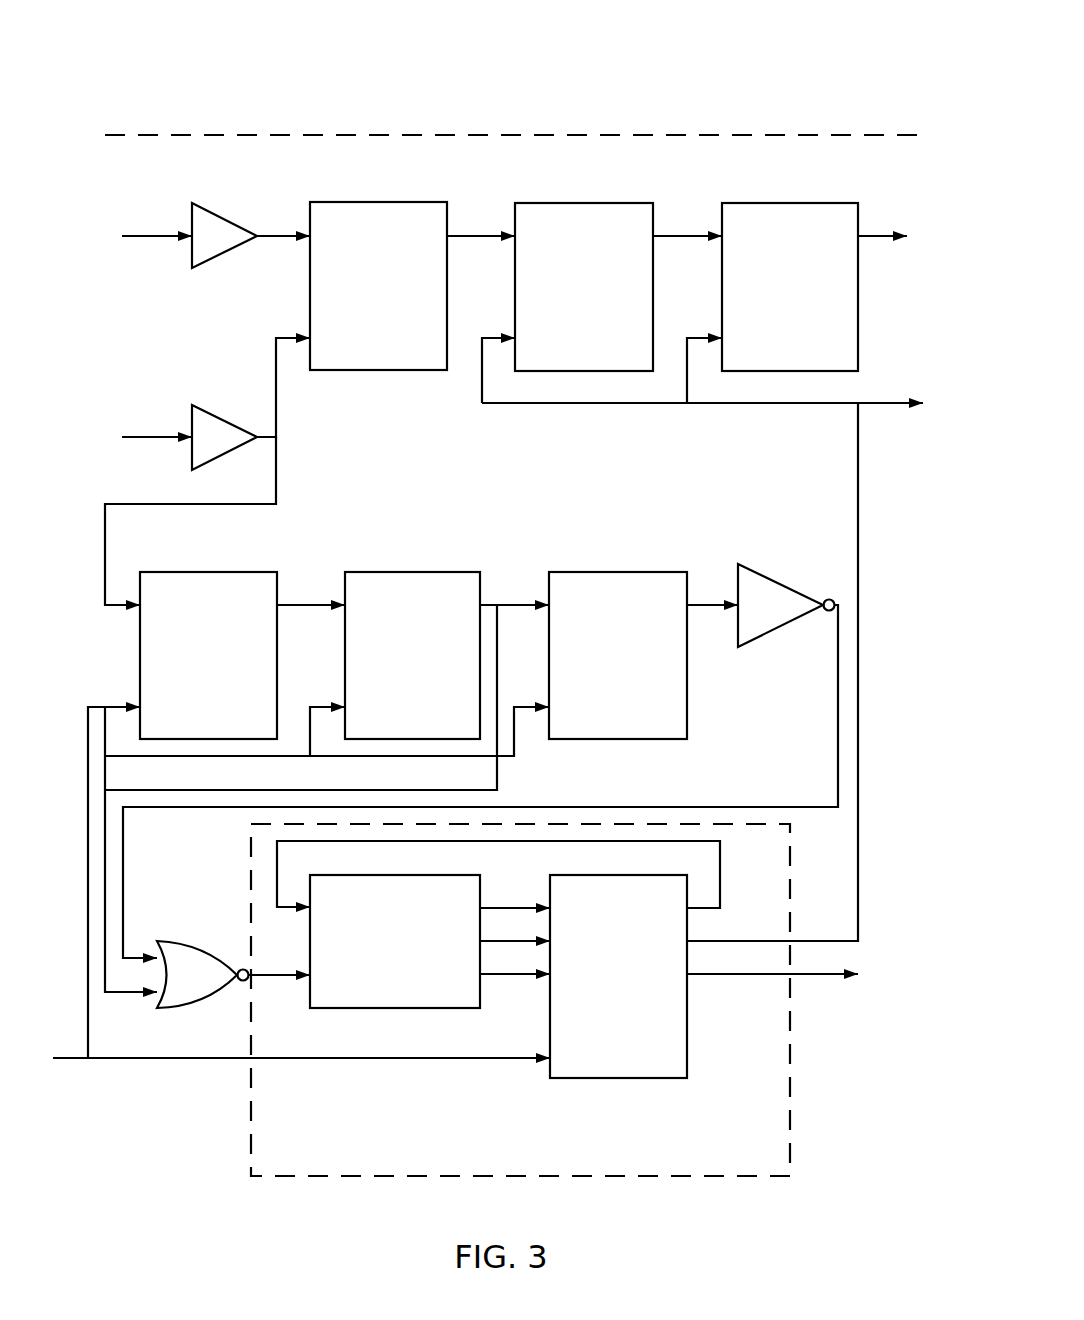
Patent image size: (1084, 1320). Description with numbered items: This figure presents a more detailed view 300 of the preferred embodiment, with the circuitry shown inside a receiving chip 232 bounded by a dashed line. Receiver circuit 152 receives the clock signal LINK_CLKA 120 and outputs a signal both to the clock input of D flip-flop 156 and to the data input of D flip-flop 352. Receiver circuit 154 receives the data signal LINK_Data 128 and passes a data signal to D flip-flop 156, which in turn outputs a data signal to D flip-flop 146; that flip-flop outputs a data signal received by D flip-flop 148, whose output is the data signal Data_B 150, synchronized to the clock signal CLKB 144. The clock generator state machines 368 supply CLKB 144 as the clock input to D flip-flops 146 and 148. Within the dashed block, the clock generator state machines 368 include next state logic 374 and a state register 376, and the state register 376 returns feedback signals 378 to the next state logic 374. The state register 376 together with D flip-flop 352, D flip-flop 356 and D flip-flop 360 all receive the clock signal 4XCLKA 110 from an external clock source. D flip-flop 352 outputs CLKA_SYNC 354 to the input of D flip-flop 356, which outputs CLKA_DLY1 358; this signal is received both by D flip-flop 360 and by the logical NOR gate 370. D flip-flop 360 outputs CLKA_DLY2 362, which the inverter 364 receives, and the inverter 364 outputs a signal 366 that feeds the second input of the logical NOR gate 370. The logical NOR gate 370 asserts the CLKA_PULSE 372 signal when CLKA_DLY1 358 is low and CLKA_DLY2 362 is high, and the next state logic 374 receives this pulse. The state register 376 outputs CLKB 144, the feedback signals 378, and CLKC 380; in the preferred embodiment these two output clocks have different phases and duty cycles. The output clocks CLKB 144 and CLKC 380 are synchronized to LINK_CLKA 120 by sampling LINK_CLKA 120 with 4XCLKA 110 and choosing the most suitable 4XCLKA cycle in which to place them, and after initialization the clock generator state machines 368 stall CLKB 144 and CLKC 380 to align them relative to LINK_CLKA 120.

The detailed view 300 is at (270, 34).
The receiving chip 232 is at (373, 134).
The data signal LINK_Data 128 is at (145, 220).
The receiver circuit 154 is at (222, 216).
The D flip-flop 156 is at (412, 202).
The D flip-flop 146 is at (636, 203).
The D flip-flop 148 is at (824, 203).
The data signal Data_B 150 is at (882, 254).
The clock signal CLKB 144 is at (702, 672).
The clock signal LINK_CLKA 120 is at (145, 421).
The receiver circuit 152 is at (223, 418).
The D flip-flop 352 is at (158, 572).
The CLKA_SYNC 354 is at (297, 605).
The D flip-flop 356 is at (405, 572).
The CLKA_DLY1 358 is at (503, 604).
The D flip-flop 360 is at (637, 572).
The CLKA_DLY2 362 is at (707, 605).
The inverter 364 is at (773, 580).
The signal 366 is at (838, 688).
The clock signal 4XCLKA 110 is at (301, 899).
The logical NOR gate 370 is at (188, 941).
The CLKA_PULSE 372 is at (275, 975).
The next state logic 374 is at (378, 1008).
The state register 376 is at (687, 1058).
The feedback signals 378 is at (597, 841).
The clock signal CLKC 380 is at (773, 989).
The clock generator state machines 368 is at (251, 1142).